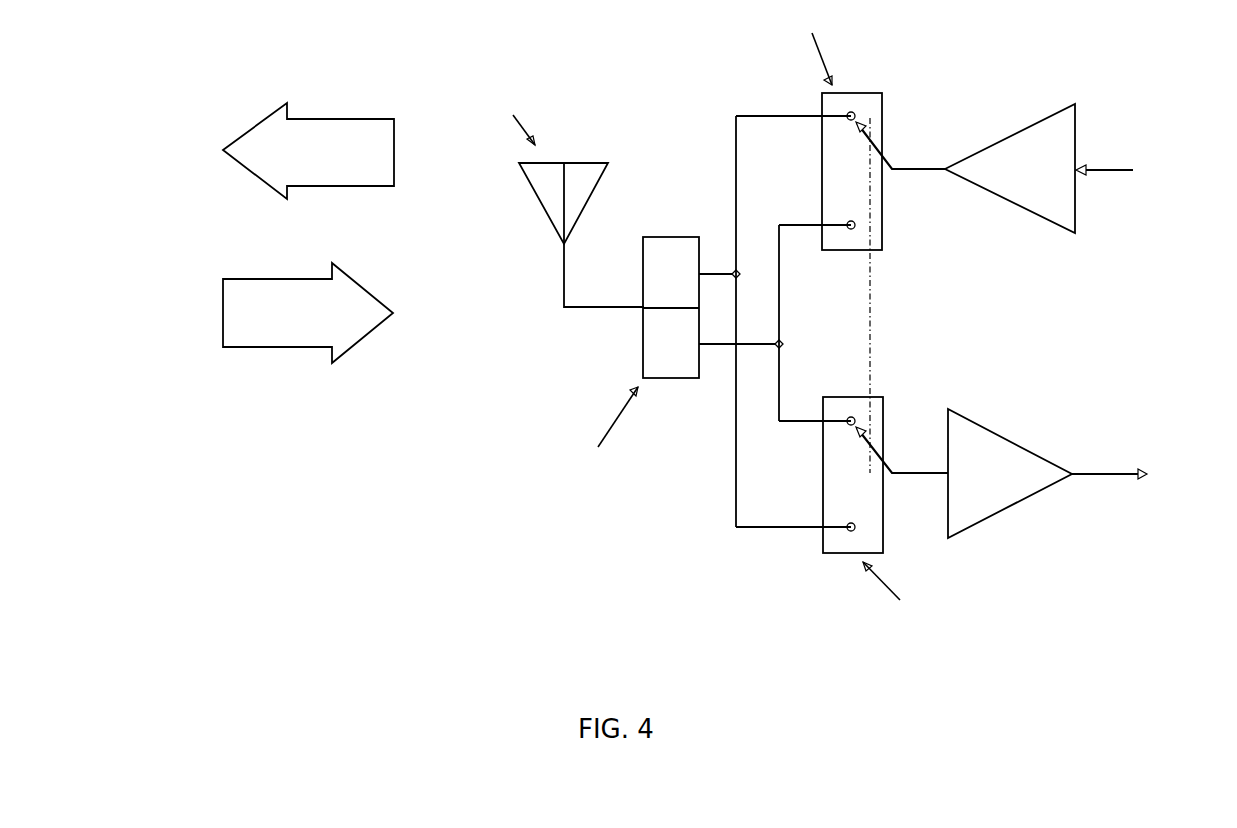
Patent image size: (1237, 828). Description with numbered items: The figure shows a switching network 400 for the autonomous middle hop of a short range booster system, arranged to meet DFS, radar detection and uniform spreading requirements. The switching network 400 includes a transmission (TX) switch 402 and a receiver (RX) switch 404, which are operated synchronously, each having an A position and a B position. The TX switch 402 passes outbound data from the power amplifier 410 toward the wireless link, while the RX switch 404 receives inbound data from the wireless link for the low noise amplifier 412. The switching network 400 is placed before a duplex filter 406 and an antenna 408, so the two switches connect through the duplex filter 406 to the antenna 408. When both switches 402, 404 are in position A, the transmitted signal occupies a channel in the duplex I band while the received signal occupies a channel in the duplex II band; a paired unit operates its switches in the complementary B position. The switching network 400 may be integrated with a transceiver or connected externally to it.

The switching network 400 is at (232, 642).
The transmission (TX) switch 402 is at (883, 198).
The receiver (RX) switch 404 is at (885, 402).
The duplex filter 406 is at (634, 365).
The antenna 408 is at (600, 190).
The power amplifier 410 is at (1027, 125).
The low noise amplifier 412 is at (1016, 442).